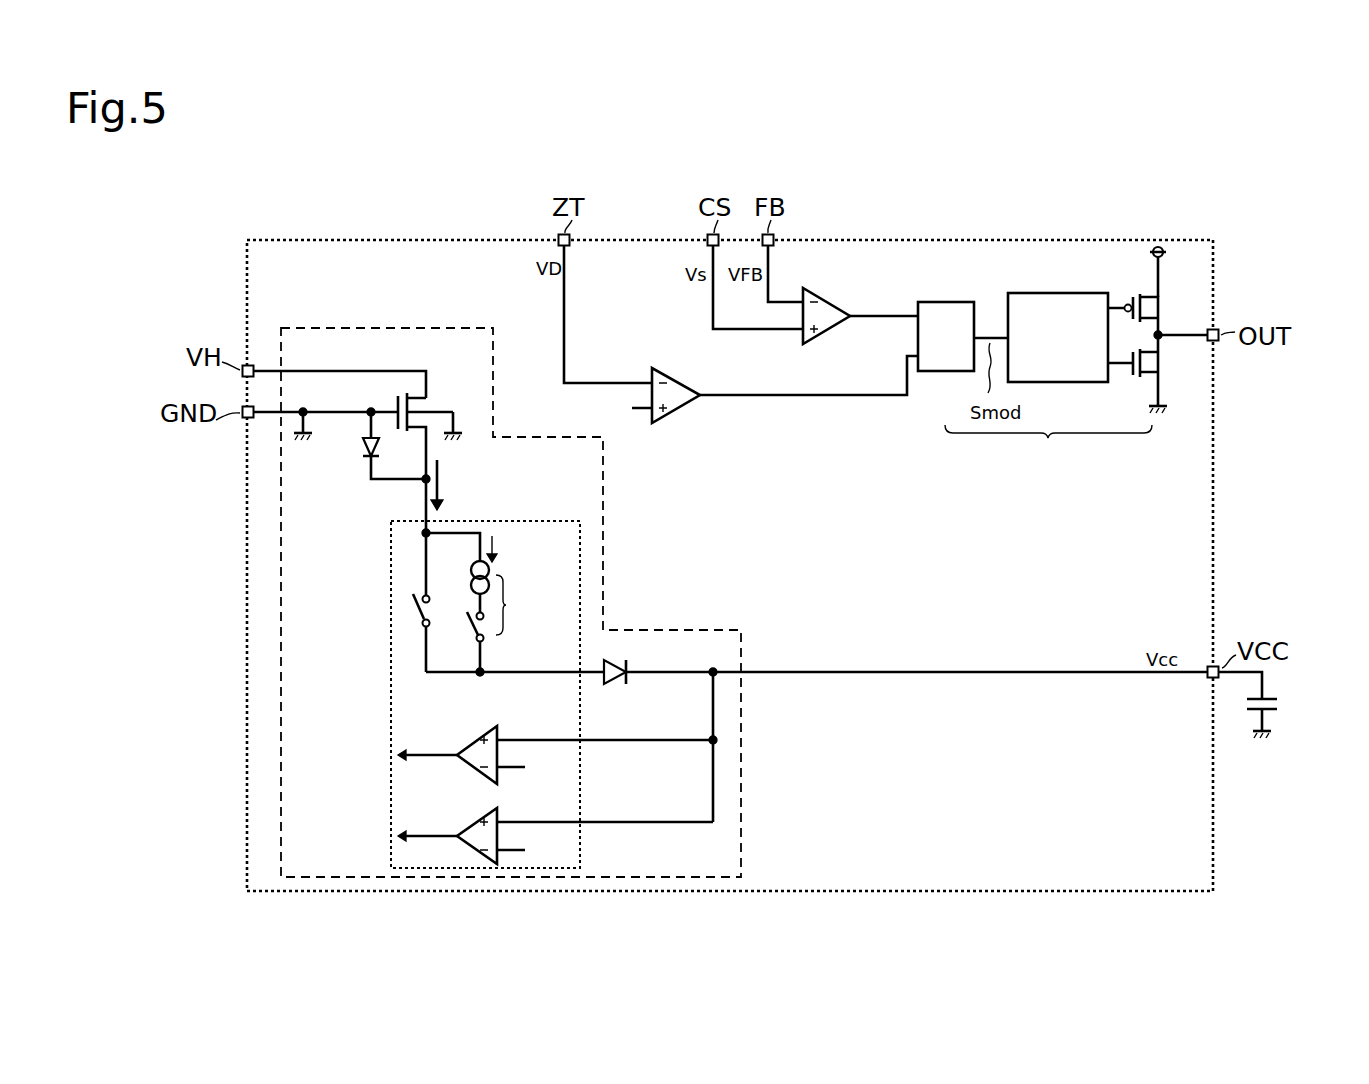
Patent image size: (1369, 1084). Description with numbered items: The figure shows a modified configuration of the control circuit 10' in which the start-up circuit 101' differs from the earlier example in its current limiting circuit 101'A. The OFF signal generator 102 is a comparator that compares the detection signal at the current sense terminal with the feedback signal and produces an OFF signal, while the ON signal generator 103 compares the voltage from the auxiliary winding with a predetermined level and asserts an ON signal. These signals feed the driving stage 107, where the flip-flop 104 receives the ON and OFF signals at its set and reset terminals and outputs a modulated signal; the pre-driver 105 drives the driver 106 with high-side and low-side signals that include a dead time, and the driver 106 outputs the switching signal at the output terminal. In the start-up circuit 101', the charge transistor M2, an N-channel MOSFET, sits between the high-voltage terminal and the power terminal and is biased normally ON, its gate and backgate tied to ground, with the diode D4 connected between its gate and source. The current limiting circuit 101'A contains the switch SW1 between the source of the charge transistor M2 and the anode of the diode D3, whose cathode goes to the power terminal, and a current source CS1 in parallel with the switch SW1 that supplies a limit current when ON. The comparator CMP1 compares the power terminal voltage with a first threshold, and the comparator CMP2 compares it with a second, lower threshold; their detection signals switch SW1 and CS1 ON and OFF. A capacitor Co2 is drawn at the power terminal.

The control circuit 10' is at (733, 540).
The start-up circuit 101' is at (497, 576).
The current limiting circuit 101'A is at (508, 680).
The OFF signal generator 102 is at (826, 298).
The ON signal generator 103 is at (686, 365).
The flip-flop 104 is at (965, 301).
The pre-driver 105 is at (1035, 293).
The driver 106 is at (1134, 290).
The driving stage 107 is at (1048, 448).
The charge transistor M2 is at (395, 404).
The diode D4 is at (359, 445).
The diode D3 is at (614, 686).
The switch SW1 is at (412, 612).
The current source CS1 is at (512, 604).
The comparator CMP1 is at (484, 735).
The comparator CMP2 is at (482, 816).
The capacitor Co2 is at (1279, 703).